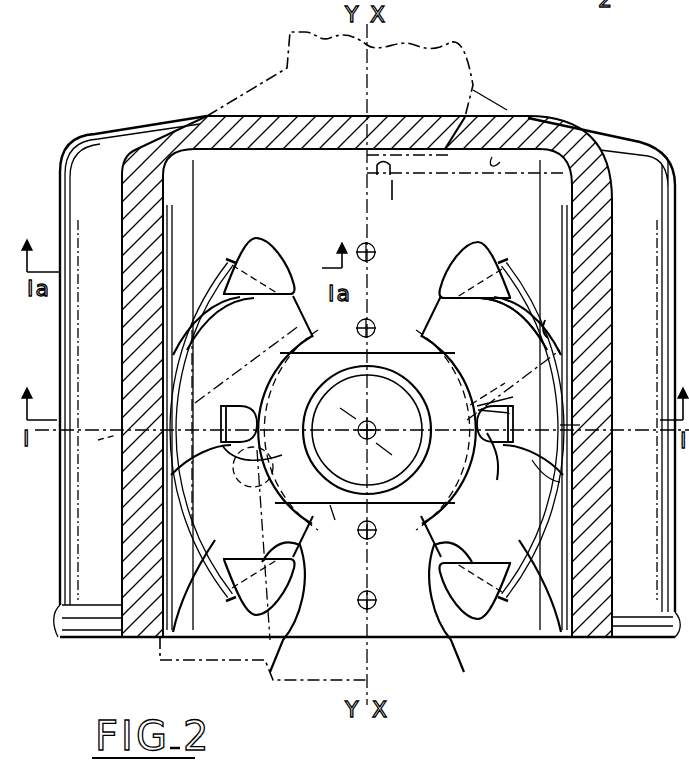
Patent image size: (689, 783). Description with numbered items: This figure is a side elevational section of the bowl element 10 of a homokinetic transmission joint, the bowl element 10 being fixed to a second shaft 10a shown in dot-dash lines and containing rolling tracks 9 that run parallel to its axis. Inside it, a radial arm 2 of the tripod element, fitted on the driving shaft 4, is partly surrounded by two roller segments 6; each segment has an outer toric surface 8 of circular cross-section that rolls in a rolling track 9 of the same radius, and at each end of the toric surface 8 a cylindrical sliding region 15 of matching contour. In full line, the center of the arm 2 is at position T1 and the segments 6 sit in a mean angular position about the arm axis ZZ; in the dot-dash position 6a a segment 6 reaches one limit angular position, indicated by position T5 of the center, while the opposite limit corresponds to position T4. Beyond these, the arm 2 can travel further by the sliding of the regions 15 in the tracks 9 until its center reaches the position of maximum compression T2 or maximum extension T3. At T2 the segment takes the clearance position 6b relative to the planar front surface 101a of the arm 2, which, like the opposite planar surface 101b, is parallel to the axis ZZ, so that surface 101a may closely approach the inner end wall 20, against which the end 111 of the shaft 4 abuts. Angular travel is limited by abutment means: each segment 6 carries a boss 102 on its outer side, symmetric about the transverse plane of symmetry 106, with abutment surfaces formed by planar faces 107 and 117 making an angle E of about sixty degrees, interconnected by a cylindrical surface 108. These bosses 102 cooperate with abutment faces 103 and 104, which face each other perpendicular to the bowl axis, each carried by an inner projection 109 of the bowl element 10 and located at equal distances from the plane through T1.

The radial arm 2 is at (408, 372).
The driving shaft 4 is at (440, 180).
The roller segment 6 is at (210, 372).
The roller segment limit position 6a is at (125, 437).
The roller segment clearance position 6b is at (545, 320).
The toric surface 8 is at (185, 520).
The rolling track 9 is at (172, 197).
The bowl element 10 is at (123, 468).
The second shaft 10a is at (276, 66).
The cylindrical sliding region 15 is at (225, 282).
The inner end wall 20 is at (493, 152).
The front arm surface 101a is at (317, 330).
The opposite arm surface 101b is at (340, 505).
The boss 102 is at (240, 444).
The abutment face 103 is at (200, 340).
The abutment face 104 is at (263, 665).
The transverse plane of symmetry 106 is at (622, 428).
The planar face 107 is at (497, 480).
The cylindrical surface 108 is at (532, 460).
The inner projection 109 is at (250, 240).
The end of the shaft 111 is at (470, 90).
The planar face 117 is at (520, 453).
The angle E is at (466, 403).
The center position T1 is at (357, 422).
The position of maximum compression T2 is at (376, 252).
The position of maximum extension T3 is at (377, 601).
The center position T4 is at (366, 318).
The center position T5 is at (377, 531).
The axis of the arm ZZ is at (366, 442).